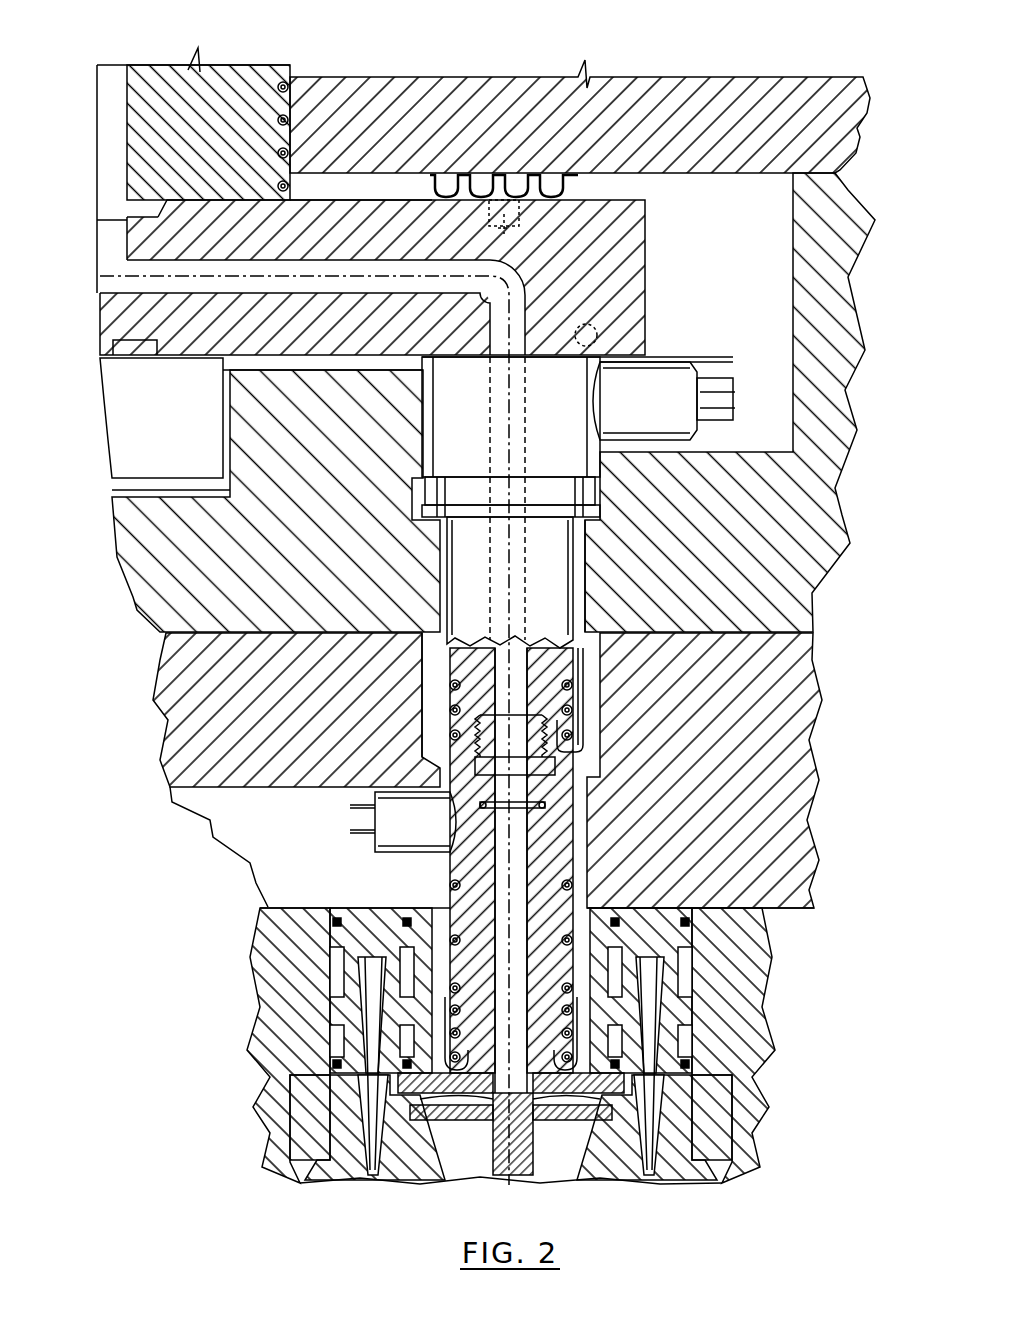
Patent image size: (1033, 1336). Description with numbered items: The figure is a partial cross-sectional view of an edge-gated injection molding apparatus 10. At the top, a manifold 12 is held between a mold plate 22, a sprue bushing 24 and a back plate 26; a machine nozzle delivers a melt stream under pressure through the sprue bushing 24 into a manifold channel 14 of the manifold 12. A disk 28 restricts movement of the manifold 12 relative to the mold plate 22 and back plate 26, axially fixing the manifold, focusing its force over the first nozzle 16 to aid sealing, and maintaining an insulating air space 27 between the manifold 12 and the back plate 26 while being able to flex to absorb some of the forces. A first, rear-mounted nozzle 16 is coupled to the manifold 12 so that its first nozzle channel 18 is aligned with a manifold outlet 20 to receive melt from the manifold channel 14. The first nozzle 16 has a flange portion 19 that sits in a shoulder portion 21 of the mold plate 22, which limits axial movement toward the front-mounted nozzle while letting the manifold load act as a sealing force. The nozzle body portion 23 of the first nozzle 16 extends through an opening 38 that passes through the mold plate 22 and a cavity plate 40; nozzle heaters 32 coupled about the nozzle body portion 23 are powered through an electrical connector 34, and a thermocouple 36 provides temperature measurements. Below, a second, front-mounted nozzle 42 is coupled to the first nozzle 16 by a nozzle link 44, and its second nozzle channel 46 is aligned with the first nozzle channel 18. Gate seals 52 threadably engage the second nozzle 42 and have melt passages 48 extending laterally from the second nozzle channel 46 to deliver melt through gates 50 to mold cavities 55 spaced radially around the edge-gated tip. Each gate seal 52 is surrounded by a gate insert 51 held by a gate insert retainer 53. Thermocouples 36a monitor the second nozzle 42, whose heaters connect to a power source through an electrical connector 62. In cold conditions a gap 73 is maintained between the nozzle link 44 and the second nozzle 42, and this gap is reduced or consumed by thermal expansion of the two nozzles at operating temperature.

The injection molding apparatus 10 is at (865, 181).
The manifold 12 is at (607, 212).
The manifold channel 14 is at (128, 286).
The first nozzle 16 is at (541, 590).
The first nozzle channel 18 is at (527, 660).
The flange portion 19 is at (590, 517).
The manifold outlet 20 is at (525, 353).
The shoulder portion 21 is at (602, 517).
The mold plate 22 is at (162, 538).
The nozzle body portion 23 is at (421, 645).
The sprue bushing 24 is at (238, 95).
The back plate 26 is at (737, 133).
The air space 27 is at (353, 183).
The disk 28 is at (455, 182).
The nozzle heaters 32 is at (580, 698).
The electrical connector 34 is at (630, 415).
The thermocouple 36 is at (580, 760).
The thermocouple 36a is at (443, 1025).
The opening 38 is at (586, 604).
The cavity plate 40 is at (277, 735).
The second nozzle 42 is at (476, 902).
The nozzle link 44 is at (550, 798).
The second nozzle channel 46 is at (521, 868).
The melt passages 48 is at (470, 1097).
The gates 50 is at (375, 1150).
The gate insert 51 is at (285, 1135).
The gate seals 52 is at (423, 1133).
The gate insert retainer 53 is at (308, 1150).
The mold cavities 55 is at (285, 1103).
The electrical connector 62 is at (405, 830).
The gap 73 is at (557, 817).